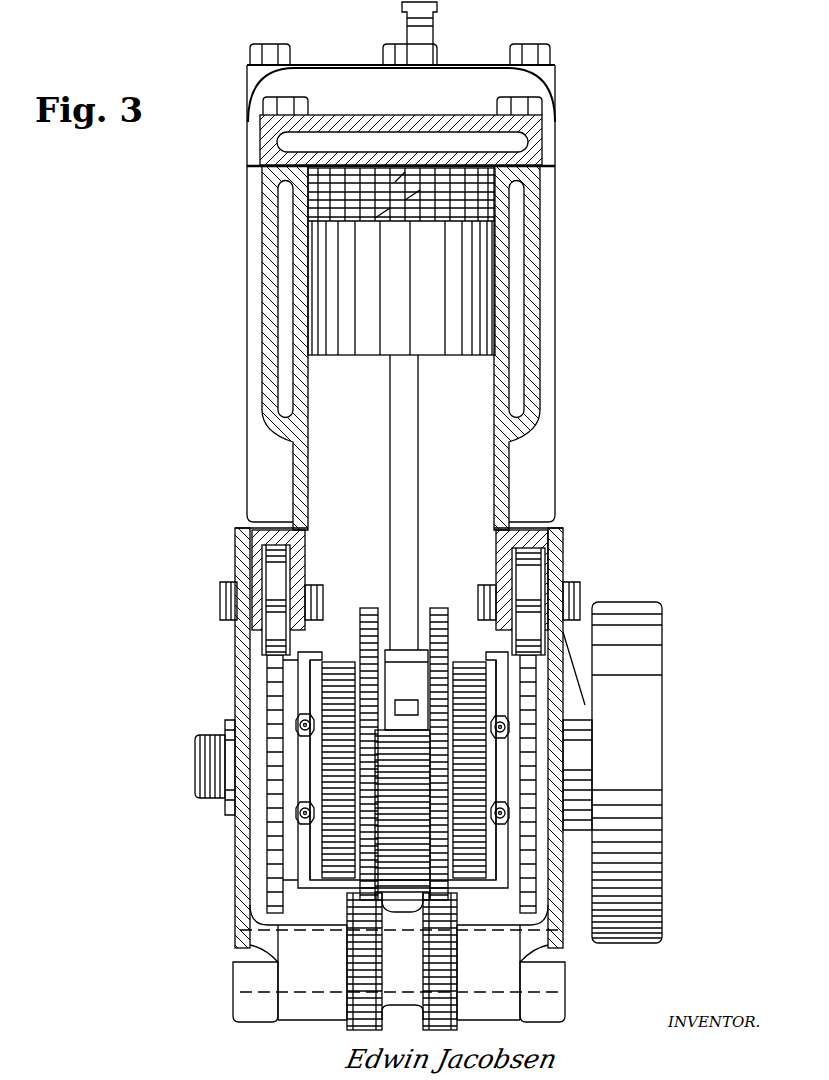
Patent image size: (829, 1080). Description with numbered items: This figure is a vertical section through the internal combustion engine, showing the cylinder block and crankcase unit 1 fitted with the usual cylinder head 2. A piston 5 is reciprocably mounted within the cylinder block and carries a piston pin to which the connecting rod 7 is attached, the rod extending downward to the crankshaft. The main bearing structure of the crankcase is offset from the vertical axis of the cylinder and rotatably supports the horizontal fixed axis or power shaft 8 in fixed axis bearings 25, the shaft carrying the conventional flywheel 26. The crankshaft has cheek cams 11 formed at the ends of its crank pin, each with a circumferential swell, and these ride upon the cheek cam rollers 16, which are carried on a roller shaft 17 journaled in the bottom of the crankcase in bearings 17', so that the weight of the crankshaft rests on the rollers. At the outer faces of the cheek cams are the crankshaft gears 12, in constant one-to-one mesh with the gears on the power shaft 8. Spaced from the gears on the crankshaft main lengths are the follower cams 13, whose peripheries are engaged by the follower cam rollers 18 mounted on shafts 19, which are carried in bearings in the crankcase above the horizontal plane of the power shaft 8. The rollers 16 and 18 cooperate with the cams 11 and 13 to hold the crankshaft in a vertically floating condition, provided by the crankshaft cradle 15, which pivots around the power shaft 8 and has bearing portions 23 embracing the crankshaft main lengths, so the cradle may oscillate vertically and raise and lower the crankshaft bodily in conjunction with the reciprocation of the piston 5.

The cylinder block and crankcase unit 1 is at (300, 478).
The cylinder head 2 is at (372, 75).
The piston 5 is at (478, 226).
The connecting rod 7 is at (400, 491).
The power shaft 8 is at (210, 770).
The crankshaft cheeks 11 is at (370, 610).
The crankshaft gears 12 is at (340, 672).
The follower cams 13 is at (296, 722).
The crankshaft cradle 15 is at (345, 895).
The cheek cam rollers 16 is at (430, 1010).
The roller shaft 17 is at (345, 982).
The bearings 17' is at (388, 994).
The follower cam roller 18 is at (282, 592).
The shafts 19 is at (230, 598).
The bearing portions 23 is at (305, 785).
The fixed axis bearings 25 is at (226, 815).
The flywheel 26 is at (652, 718).